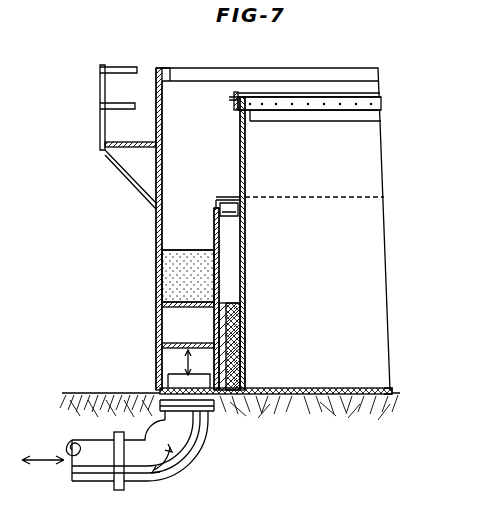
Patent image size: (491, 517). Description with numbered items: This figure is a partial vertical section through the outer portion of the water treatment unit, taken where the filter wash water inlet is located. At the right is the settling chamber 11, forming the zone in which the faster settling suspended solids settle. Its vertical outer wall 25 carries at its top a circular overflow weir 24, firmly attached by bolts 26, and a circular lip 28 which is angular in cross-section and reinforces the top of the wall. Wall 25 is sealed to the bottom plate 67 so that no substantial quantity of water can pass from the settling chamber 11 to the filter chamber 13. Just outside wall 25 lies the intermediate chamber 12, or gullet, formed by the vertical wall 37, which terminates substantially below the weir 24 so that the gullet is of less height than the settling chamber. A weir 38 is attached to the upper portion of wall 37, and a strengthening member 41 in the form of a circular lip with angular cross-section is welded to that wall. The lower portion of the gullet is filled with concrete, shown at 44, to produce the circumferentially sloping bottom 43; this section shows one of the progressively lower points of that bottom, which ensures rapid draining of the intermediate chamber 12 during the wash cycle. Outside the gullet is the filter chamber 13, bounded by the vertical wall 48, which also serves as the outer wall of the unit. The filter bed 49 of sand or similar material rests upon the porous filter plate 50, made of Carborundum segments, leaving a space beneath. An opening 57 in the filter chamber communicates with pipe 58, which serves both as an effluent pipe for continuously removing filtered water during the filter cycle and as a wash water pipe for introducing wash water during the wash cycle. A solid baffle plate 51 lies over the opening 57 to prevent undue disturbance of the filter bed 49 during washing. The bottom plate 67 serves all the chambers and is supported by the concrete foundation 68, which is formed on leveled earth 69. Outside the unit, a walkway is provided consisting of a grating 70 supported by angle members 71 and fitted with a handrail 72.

The settling chamber 11 is at (273, 229).
The intermediate chamber 12 is at (226, 248).
The filter chamber 13 is at (180, 212).
The circular overflow weir 24 is at (229, 98).
The vertical outer wall 25 is at (240, 141).
The bolts 26 is at (232, 104).
The circular lip 28 is at (292, 118).
The vertical wall 37 is at (214, 232).
The weir 38 is at (218, 198).
The strengthening member 41 is at (240, 219).
The sloping bottom 43 is at (233, 300).
The concrete filling 44 is at (242, 335).
The vertical wall 48 is at (156, 212).
The filter bed 49 is at (170, 278).
The porous filter plate 50 is at (188, 329).
The baffle plate 51 is at (165, 355).
The opening 57 is at (222, 410).
The pipe 58 is at (180, 472).
The bottom plate 67 is at (316, 388).
The concrete foundation 68 is at (393, 392).
The leveled earth 69 is at (85, 403).
The grating 70 is at (132, 139).
The angle members 71 is at (125, 176).
The handrail 72 is at (99, 99).